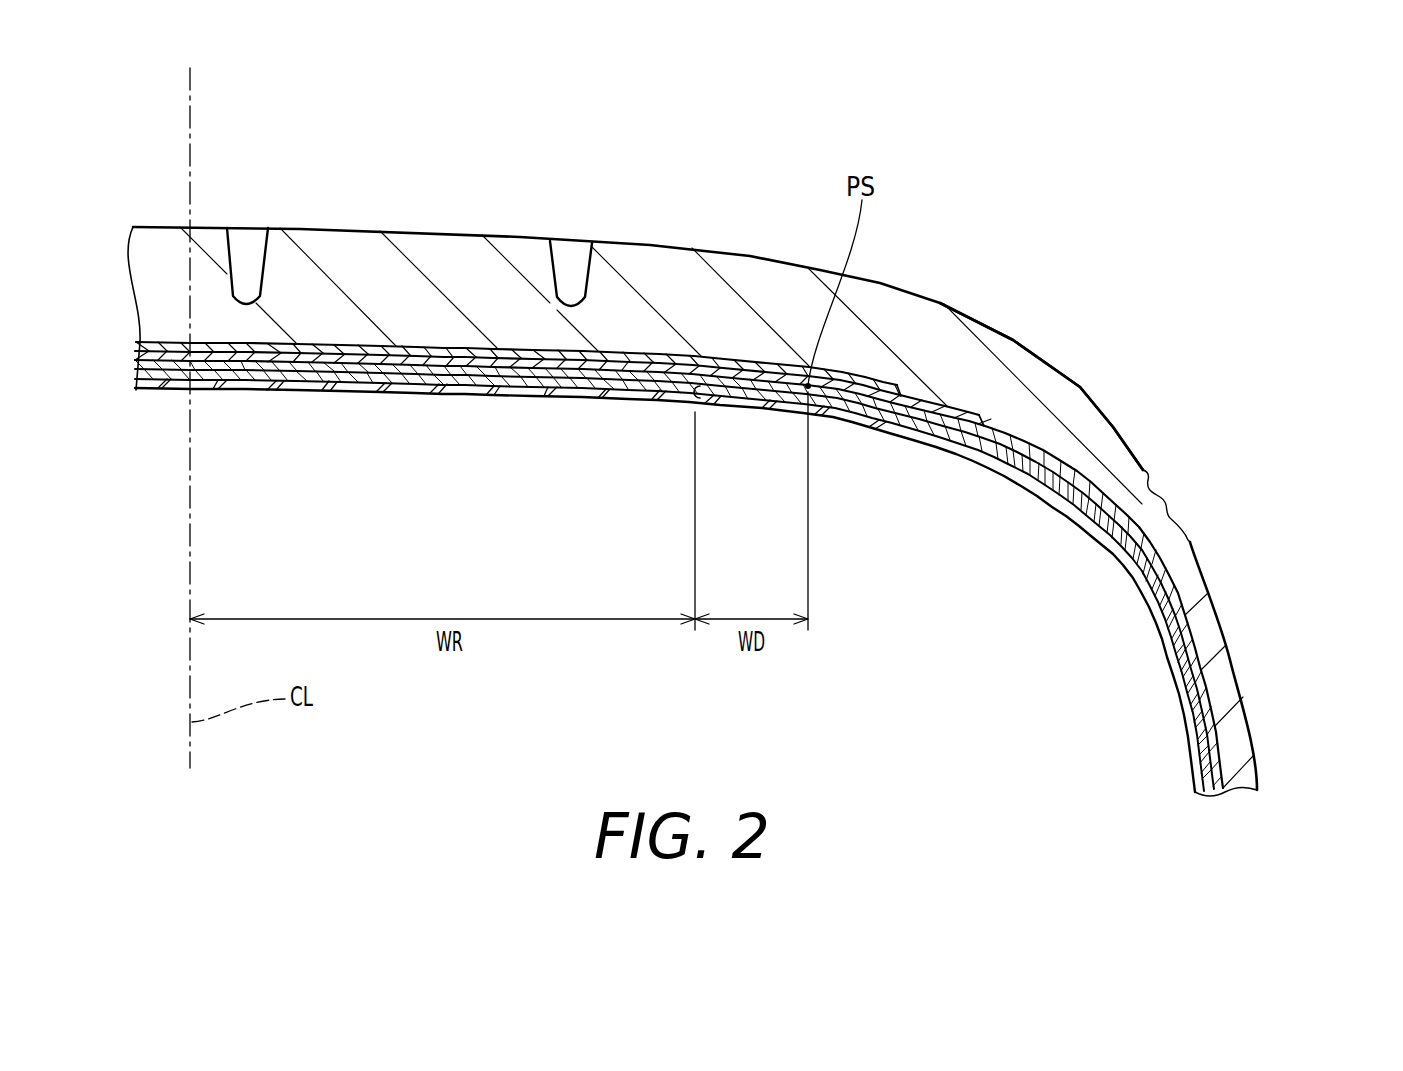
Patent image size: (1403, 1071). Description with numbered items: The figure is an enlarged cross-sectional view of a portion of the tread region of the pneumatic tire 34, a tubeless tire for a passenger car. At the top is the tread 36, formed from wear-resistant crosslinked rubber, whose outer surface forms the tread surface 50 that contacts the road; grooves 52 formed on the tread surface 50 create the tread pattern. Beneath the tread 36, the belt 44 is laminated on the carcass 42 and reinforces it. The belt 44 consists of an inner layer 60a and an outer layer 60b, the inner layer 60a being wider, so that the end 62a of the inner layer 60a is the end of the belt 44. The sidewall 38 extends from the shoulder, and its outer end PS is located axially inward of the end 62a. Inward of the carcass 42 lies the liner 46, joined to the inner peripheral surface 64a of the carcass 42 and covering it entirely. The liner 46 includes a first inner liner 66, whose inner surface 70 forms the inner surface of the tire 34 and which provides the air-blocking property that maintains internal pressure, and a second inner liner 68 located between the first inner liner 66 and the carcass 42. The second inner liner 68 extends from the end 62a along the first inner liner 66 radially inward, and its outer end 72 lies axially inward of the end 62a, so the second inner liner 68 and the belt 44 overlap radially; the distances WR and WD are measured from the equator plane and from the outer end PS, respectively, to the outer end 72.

The pneumatic tire 34 is at (1172, 103).
The tread 36 is at (958, 293).
The sidewall 38 is at (1267, 728).
The carcass 42 is at (1160, 568).
The belt 44 is at (470, 442).
The liner 46 is at (948, 540).
The tread surface 50 is at (745, 252).
The grooves 52 is at (262, 257).
The inner layer 60a is at (545, 365).
The outer layer 60b is at (569, 362).
The end of inner layer 62a is at (985, 403).
The inner peripheral surface of carcass 64a is at (1195, 650).
The first inner liner 66 is at (1055, 503).
The second inner liner 68 is at (1100, 565).
The inner surface of first inner liner 70 is at (1155, 620).
The outer end of second inner liner 72 is at (683, 391).